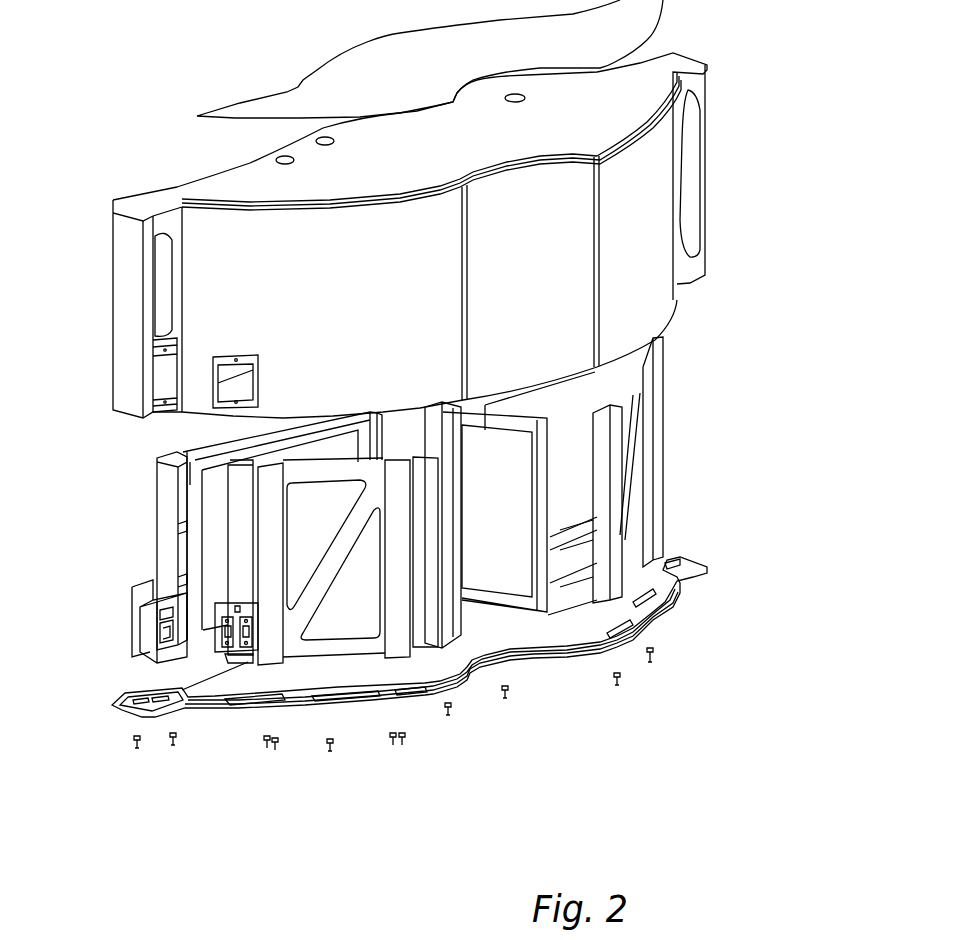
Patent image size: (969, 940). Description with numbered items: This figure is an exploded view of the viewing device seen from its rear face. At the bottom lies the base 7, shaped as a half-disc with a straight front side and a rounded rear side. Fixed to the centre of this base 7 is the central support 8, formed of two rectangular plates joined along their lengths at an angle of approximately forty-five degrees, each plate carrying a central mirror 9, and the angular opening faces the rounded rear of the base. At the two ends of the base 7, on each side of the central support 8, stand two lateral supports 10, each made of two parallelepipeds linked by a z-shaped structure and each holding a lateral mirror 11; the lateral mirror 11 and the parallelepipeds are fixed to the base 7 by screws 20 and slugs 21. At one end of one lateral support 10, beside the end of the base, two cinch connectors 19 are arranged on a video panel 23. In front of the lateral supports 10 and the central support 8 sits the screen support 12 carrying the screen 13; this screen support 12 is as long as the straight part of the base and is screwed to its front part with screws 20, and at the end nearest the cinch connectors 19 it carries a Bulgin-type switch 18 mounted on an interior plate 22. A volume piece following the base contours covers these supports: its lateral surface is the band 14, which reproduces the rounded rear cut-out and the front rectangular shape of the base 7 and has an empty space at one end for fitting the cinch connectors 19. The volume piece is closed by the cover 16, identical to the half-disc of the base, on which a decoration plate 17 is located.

The base 7 is at (580, 622).
The central support 8 is at (538, 580).
The central mirror 9 is at (496, 527).
The lateral support 10 is at (317, 588).
The lateral mirror 11 is at (350, 610).
The screen support 12 is at (170, 480).
The screen 13 is at (640, 380).
The band 14 is at (228, 282).
The cover 16 is at (178, 190).
The decoration plate 17 is at (347, 77).
The Bulgin-type switch 18 is at (147, 627).
The cinch connector 19 is at (224, 634).
The screw 20 is at (133, 747).
The slug 21 is at (263, 743).
The interior plate 22 is at (133, 645).
The video panel 23 is at (253, 653).